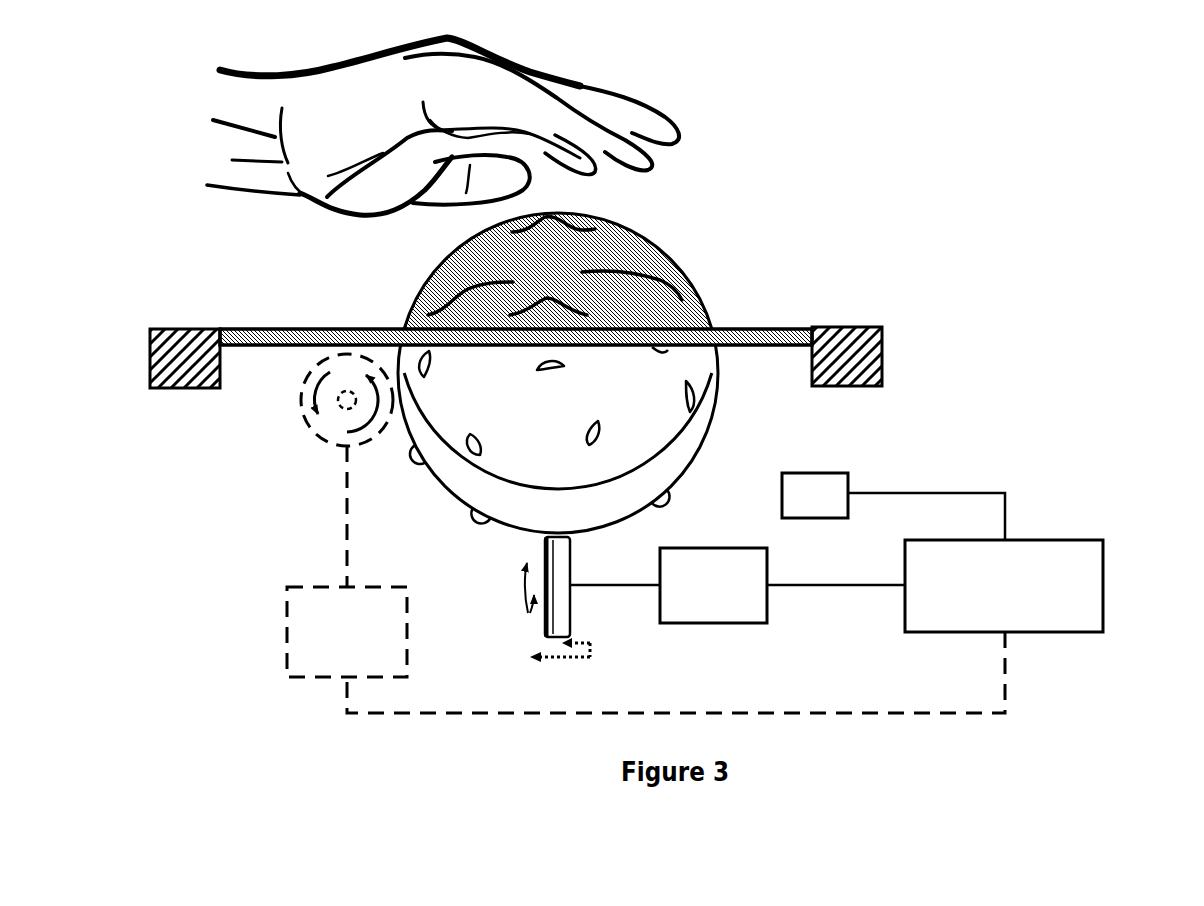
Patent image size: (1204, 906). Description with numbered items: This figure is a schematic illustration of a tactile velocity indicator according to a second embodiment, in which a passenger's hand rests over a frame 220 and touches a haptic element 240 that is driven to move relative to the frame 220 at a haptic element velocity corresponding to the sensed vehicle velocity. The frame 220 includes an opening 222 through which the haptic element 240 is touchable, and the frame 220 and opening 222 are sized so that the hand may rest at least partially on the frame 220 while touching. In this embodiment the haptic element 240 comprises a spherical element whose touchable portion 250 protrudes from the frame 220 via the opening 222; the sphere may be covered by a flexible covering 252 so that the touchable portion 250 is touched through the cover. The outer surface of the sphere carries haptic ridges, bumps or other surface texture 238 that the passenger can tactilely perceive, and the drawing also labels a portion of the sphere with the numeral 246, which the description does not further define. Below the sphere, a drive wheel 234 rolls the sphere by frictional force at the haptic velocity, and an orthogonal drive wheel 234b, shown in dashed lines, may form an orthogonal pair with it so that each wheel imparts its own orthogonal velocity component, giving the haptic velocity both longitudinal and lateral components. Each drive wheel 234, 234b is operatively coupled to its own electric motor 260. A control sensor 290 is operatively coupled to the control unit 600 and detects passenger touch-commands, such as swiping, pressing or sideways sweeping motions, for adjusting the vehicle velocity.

The touchable portion 250 is at (729, 217).
The flexible covering 252 is at (738, 327).
The opening 222 is at (256, 322).
The frame 220 is at (866, 327).
The surface texture 238 is at (432, 360).
The ball body 246 is at (714, 384).
The haptic element 240 is at (779, 394).
The control sensor 290 is at (782, 490).
The electric motor 260 is at (750, 624).
The control unit 600 is at (1104, 616).
The drive wheel 234 is at (546, 628).
The orthogonal drive wheel 234b is at (306, 424).